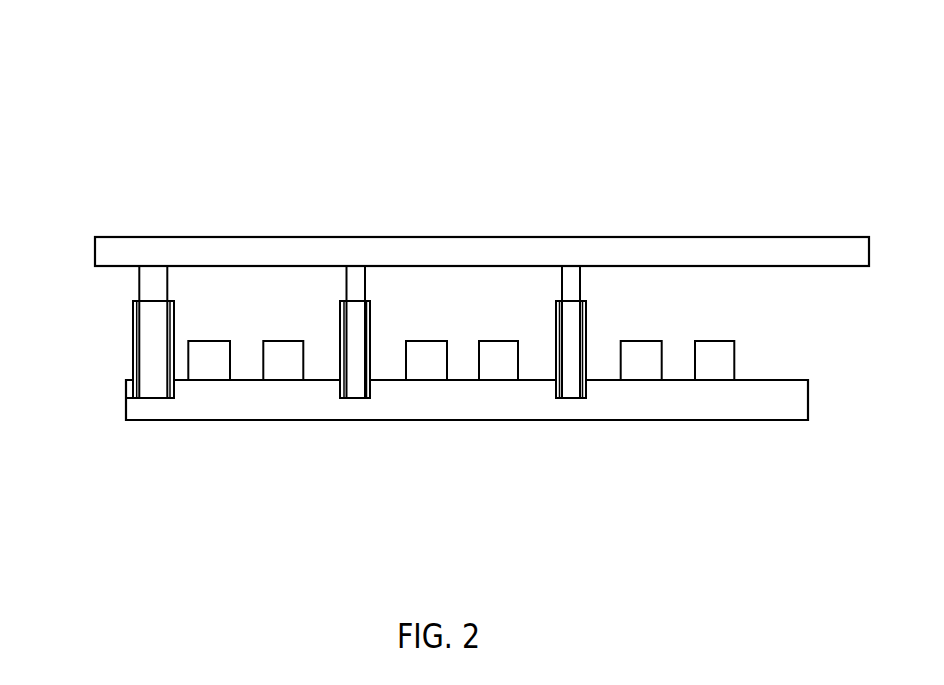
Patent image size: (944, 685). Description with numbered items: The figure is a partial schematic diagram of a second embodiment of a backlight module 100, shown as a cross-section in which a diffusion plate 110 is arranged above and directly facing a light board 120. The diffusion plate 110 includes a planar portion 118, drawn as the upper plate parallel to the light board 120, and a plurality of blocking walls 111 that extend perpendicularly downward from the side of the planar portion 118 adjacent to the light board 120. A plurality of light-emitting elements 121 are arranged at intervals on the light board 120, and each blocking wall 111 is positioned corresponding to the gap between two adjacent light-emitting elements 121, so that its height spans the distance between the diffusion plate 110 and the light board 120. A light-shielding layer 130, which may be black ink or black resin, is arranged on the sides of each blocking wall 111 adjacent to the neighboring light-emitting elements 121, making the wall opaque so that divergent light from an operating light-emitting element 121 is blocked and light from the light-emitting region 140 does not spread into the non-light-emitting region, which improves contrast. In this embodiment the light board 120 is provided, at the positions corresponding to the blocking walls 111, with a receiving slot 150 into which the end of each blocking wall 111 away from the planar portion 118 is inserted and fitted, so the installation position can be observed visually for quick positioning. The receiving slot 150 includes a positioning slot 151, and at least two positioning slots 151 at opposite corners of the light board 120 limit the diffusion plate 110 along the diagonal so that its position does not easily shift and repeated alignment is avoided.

The backlight module 100 is at (170, 55).
The diffusion plate 110 is at (423, 108).
The planar portion 118 is at (285, 254).
The blocking wall 111 is at (360, 285).
The light board 120 is at (569, 407).
The light-emitting element 121 is at (507, 355).
The light-shielding layer 130 is at (362, 357).
The light-emitting region 140 is at (384, 380).
The receiving slot 150 is at (341, 398).
The positioning slot 151 is at (134, 398).